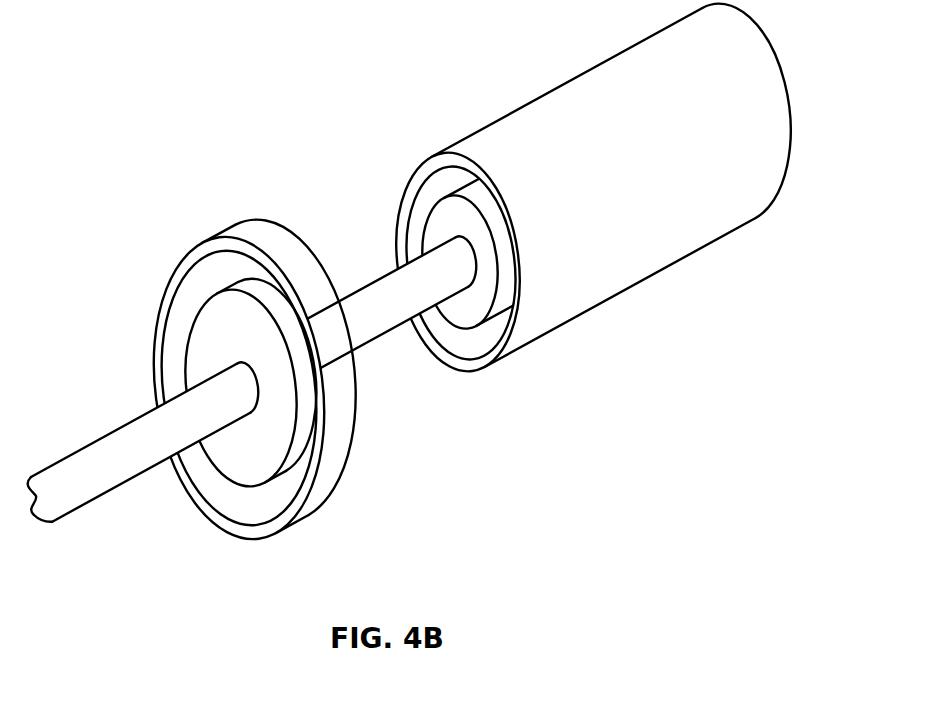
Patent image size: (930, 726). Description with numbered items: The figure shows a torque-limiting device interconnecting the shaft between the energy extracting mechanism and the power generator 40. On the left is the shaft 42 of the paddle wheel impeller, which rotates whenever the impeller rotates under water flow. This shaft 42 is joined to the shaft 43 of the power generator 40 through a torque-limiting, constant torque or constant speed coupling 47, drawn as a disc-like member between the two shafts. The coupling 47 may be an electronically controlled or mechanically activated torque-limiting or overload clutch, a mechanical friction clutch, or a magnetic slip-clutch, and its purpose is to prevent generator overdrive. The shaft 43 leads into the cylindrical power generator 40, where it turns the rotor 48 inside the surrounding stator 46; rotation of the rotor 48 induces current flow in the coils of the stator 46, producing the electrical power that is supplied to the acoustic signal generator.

The power generator 40 is at (569, 191).
The shaft 42 is at (106, 436).
The shaft 43 is at (384, 279).
The stator 46 is at (490, 125).
The coupling 47 is at (172, 237).
The rotor 48 is at (433, 203).